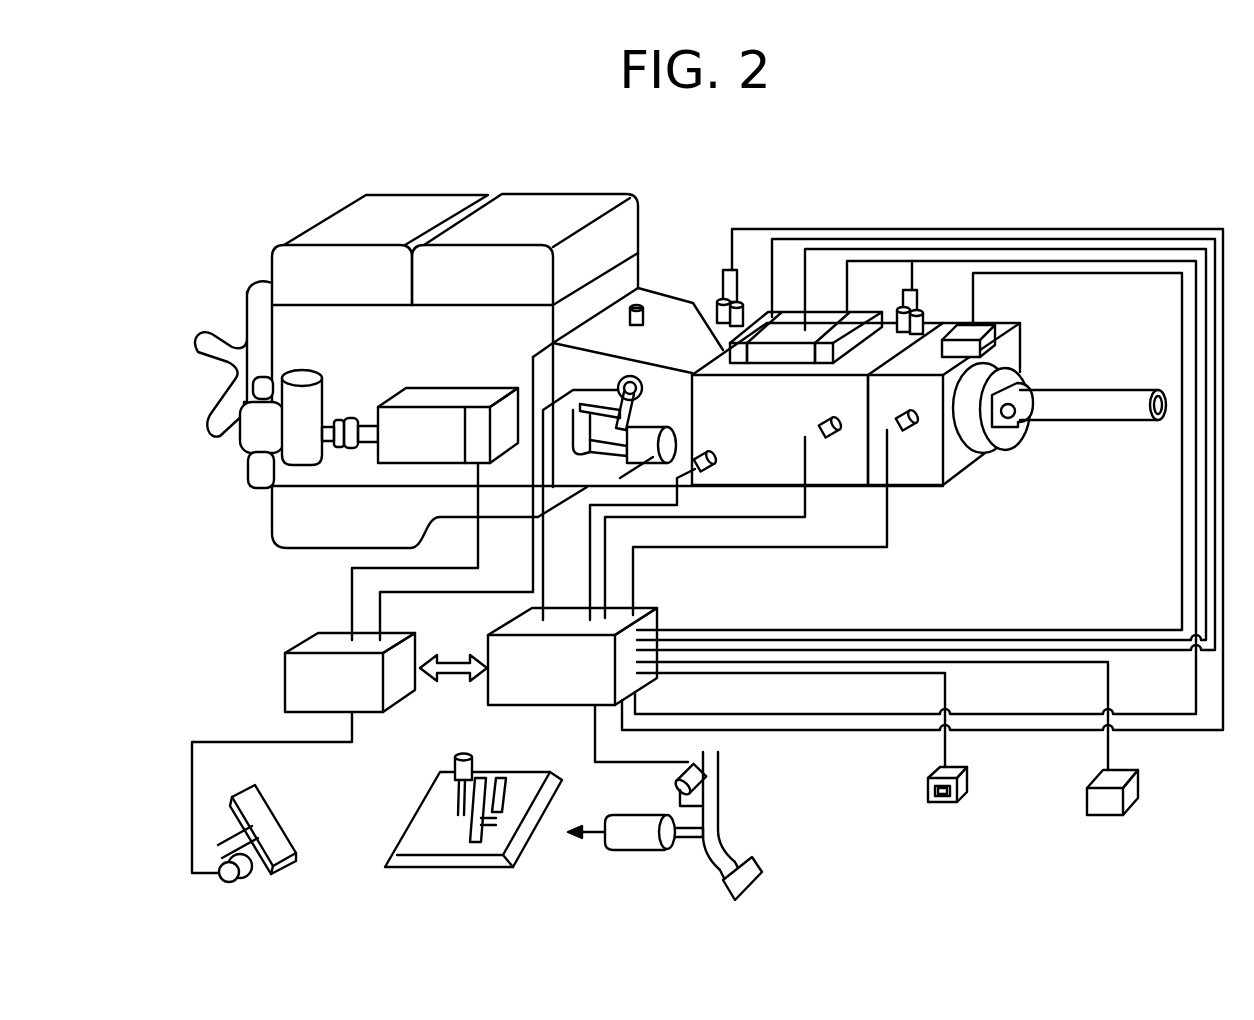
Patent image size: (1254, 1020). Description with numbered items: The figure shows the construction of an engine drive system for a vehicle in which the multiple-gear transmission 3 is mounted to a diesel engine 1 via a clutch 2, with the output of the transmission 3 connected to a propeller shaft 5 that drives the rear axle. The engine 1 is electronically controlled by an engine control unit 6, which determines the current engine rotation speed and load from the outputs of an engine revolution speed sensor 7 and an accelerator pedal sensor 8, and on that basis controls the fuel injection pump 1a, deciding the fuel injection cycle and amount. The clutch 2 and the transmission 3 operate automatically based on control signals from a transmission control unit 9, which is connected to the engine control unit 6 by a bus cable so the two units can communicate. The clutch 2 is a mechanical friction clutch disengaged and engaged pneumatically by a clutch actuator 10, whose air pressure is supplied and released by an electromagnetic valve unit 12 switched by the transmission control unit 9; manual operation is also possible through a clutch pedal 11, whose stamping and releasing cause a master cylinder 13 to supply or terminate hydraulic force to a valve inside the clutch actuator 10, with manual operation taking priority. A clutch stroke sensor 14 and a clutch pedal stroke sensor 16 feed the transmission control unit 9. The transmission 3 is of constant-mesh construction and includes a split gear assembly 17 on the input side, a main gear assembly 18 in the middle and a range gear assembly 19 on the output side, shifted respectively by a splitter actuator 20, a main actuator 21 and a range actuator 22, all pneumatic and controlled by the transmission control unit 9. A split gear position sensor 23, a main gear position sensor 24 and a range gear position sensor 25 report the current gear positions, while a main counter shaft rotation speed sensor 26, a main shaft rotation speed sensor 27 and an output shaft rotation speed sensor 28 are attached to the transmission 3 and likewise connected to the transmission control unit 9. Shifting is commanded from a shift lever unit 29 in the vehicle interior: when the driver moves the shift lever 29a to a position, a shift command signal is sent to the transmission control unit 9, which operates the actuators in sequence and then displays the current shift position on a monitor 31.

The engine 1 is at (346, 357).
The fuel injection pump 1a is at (397, 452).
The clutch 2 is at (664, 355).
The multiple-gear transmission 3 is at (748, 425).
The propeller shaft 5 is at (1068, 407).
The engine control unit 6 is at (323, 700).
The engine revolution speed sensor 7 is at (640, 302).
The accelerator pedal sensor 8 is at (230, 882).
The transmission control unit 9 is at (542, 682).
The clutch actuator 10 is at (642, 435).
The clutch pedal 11 is at (745, 877).
The electromagnetic valve unit 12 is at (1105, 815).
The master cylinder 13 is at (630, 835).
The clutch stroke sensor 14 is at (617, 382).
The clutch pedal stroke sensor 16 is at (675, 778).
The split gear assembly 17 is at (716, 355).
The main gear assembly 18 is at (808, 364).
The range gear assembly 19 is at (930, 359).
The splitter actuator 20 is at (758, 315).
The main actuator 21 is at (790, 327).
The range actuator 22 is at (982, 329).
The split gear position sensor 23 is at (713, 292).
The main gear position sensor 24 is at (862, 304).
The range gear position sensor 25 is at (925, 294).
The main counter shaft rotation speed sensor 26 is at (720, 462).
The main shaft rotation speed sensor 27 is at (833, 435).
The output shaft rotation speed sensor 28 is at (910, 428).
The shift lever unit 29 is at (456, 870).
The shift lever 29a is at (455, 768).
The monitor 31 is at (940, 803).